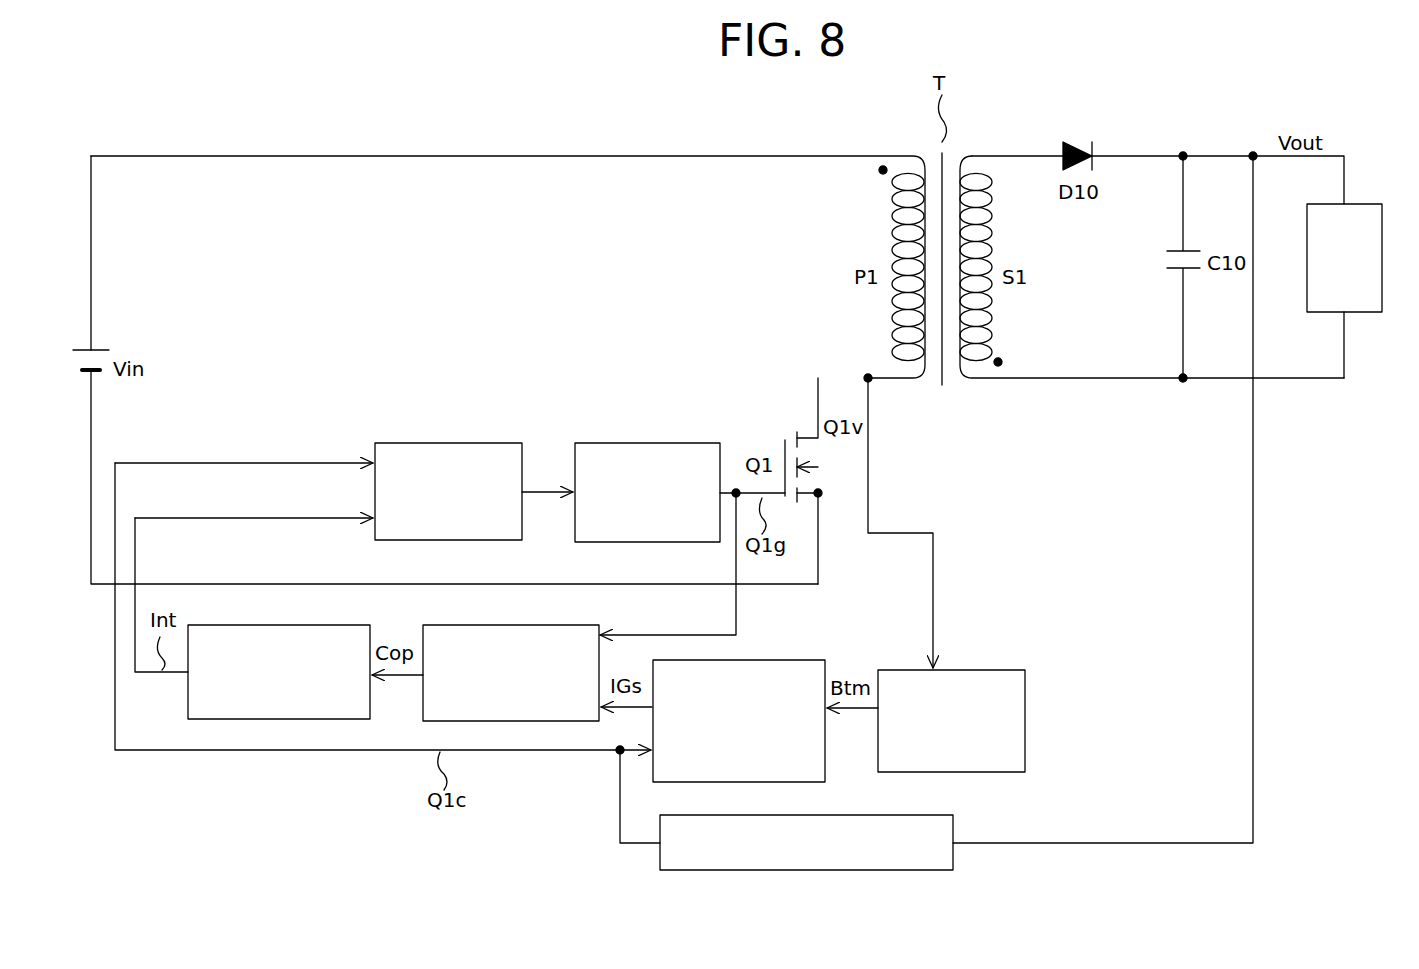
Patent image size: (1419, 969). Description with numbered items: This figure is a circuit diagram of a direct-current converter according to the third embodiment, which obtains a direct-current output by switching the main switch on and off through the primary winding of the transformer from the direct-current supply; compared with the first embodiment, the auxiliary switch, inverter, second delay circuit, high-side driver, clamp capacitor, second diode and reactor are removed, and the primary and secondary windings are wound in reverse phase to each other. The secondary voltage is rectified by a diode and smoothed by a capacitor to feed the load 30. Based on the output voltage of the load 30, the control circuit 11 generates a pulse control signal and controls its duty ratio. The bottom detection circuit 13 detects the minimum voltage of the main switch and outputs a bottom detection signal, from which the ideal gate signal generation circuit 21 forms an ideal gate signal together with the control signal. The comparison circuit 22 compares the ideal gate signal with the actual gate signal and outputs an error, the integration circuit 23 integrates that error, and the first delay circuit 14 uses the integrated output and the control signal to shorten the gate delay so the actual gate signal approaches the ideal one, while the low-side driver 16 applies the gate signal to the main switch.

The control circuit 11 is at (870, 870).
The bottom detection circuit 13 is at (1025, 712).
The first delay circuit 14 is at (446, 443).
The low-side driver 16 is at (646, 443).
The ideal gate signal generation circuit 21 is at (808, 660).
The comparison circuit 22 is at (508, 625).
The integration circuit 23 is at (188, 686).
The load 30 is at (1360, 312).